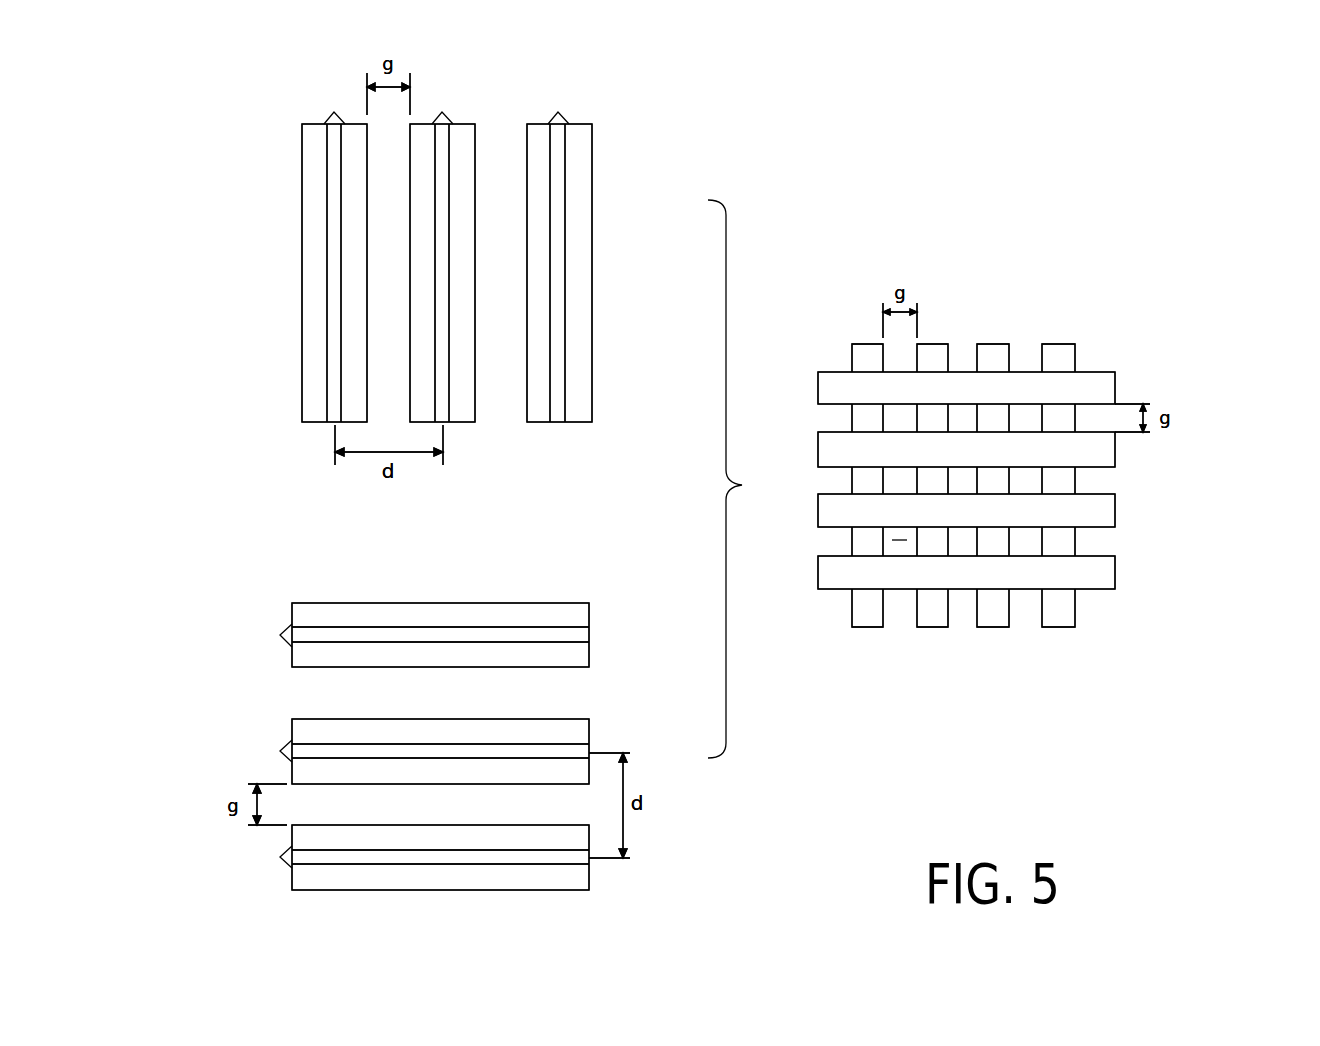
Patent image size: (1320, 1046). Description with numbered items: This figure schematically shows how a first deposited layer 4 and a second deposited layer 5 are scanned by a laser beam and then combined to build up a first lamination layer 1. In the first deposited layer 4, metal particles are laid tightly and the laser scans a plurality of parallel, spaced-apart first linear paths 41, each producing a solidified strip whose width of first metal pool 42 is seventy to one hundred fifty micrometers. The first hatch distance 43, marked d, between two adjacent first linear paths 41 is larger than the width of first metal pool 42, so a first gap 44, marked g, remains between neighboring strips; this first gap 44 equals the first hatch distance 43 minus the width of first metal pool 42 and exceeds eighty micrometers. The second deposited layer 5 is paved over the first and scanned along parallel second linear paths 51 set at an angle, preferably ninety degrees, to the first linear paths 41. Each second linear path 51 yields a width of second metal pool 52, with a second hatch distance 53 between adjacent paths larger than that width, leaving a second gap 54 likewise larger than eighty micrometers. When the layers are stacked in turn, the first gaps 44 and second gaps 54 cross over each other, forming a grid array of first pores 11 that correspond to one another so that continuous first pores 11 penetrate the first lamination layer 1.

The first lamination layer 1 is at (1083, 648).
The first deposited layer 4 is at (267, 138).
The second deposited layer 5 is at (525, 905).
The first pore 11 is at (900, 542).
The first linear path 41 is at (333, 302).
The width of first metal pool 42 is at (467, 170).
The first hatch distance 43 is at (368, 470).
The first gap 44 is at (408, 80).
The second linear path 51 is at (553, 753).
The width of second metal pool 52 is at (313, 730).
The second hatch distance 53 is at (635, 825).
The second gap 54 is at (242, 822).